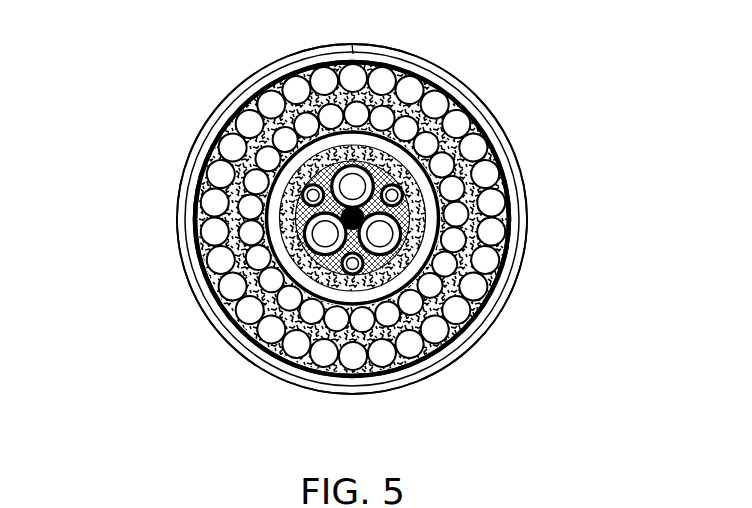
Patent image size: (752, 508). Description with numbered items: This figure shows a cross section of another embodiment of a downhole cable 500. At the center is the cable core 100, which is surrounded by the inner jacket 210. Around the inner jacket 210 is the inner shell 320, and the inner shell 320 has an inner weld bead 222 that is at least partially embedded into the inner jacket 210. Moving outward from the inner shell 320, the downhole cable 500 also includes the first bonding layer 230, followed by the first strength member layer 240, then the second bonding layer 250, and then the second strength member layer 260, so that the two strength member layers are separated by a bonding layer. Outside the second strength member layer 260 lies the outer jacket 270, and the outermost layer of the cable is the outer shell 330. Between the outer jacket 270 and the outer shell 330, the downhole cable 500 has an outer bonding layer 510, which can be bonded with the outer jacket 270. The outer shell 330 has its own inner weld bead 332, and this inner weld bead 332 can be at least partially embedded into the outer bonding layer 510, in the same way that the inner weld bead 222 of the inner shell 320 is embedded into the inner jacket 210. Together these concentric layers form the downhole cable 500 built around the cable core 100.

The downhole cable 500 is at (131, 97).
The outer bonding layer 510 is at (303, 380).
The inner weld bead 332 is at (354, 46).
The outer shell 330 is at (445, 72).
The outer jacket 270 is at (483, 125).
The second strength member layer 260 is at (492, 202).
The second bonding layer 250 is at (479, 233).
The first strength member layer 240 is at (442, 280).
The first bonding layer 230 is at (275, 321).
The inner weld bead 222 is at (278, 178).
The inner jacket 210 is at (292, 213).
The inner shell 320 is at (277, 260).
The cable core 100 is at (425, 320).